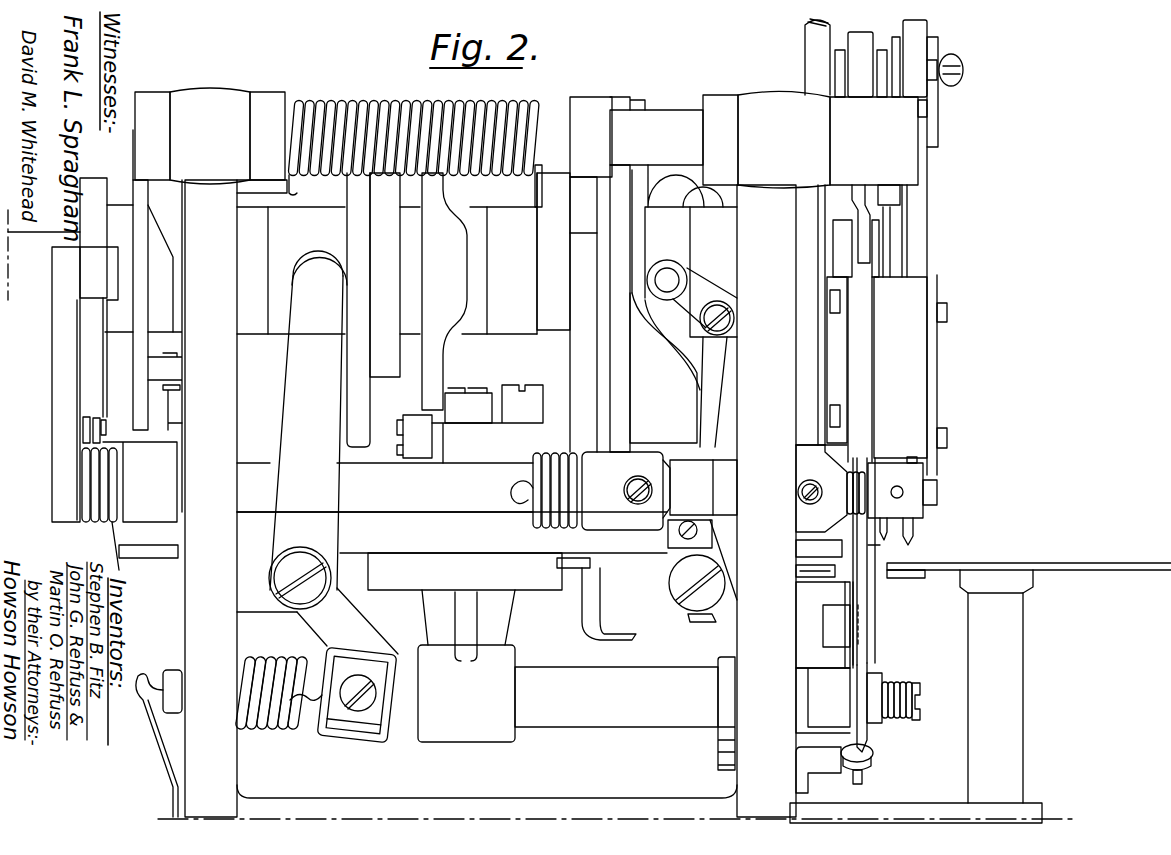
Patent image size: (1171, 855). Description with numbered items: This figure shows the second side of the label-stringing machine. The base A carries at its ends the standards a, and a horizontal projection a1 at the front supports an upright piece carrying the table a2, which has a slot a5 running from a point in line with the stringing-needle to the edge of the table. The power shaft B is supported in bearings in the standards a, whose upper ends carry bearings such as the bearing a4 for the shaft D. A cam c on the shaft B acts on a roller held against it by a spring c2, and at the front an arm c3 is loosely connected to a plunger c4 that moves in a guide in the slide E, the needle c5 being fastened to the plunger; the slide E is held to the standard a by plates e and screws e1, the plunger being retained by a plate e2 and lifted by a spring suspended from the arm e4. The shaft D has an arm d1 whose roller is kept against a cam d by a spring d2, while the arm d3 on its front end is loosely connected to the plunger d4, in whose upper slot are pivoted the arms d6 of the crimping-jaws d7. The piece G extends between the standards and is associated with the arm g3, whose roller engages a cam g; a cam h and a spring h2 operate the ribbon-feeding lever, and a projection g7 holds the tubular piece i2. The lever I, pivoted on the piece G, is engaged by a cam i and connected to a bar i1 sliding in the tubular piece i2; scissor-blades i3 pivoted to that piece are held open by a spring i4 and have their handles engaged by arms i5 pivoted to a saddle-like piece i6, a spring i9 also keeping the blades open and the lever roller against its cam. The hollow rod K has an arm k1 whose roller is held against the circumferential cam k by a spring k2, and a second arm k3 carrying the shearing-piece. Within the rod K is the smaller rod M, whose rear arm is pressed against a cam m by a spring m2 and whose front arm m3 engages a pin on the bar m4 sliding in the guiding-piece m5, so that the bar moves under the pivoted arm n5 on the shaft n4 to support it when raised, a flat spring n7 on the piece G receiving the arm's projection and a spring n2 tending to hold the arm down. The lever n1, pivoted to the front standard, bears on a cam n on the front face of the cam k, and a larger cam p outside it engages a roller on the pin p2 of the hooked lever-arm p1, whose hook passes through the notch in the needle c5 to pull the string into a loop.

The base A is at (512, 798).
The shaft B is at (63, 350).
The shaft D is at (656, 137).
The slide E is at (900, 367).
The piece G is at (452, 551).
The lever I is at (333, 452).
The hollow rod K is at (385, 487).
The rod M is at (118, 448).
The standards a is at (490, 498).
The horizontal projection a1 is at (916, 697).
The table a2 is at (1029, 556).
The bearing a4 is at (531, 138).
The slot a5 is at (905, 578).
The cam c is at (385, 275).
The spring c2 is at (932, 350).
The arm c3 is at (933, 247).
The plunger c4 is at (918, 240).
The needle c5 is at (913, 532).
The cam d is at (591, 274).
The arm d1 is at (552, 247).
The spring d2 is at (414, 135).
The arm d3 is at (854, 64).
The plunger d4 is at (879, 55).
The arms d6 is at (858, 245).
The crimping-jaws d7 is at (862, 400).
The plates e is at (837, 360).
The screws e1 is at (835, 313).
The plate e2 is at (835, 427).
The arm e4 is at (805, 72).
The cam g is at (133, 393).
The arm g3 is at (182, 428).
The projection g7 is at (466, 666).
The cam h is at (444, 291).
The spring h2 is at (432, 437).
The cam i is at (358, 310).
The bar i1 is at (363, 694).
The tubular piece i2 is at (616, 697).
The scissor-blades i3 is at (875, 625).
The spring i4 is at (899, 680).
The arms i5 is at (870, 752).
The saddle-like piece i6 is at (718, 707).
The spring i9 is at (265, 668).
The circumferential cam k is at (627, 274).
The arm k1 is at (659, 491).
The spring k2 is at (553, 458).
The arm k3 is at (821, 501).
The cam m is at (128, 311).
The spring m2 is at (92, 515).
The arm m3 is at (52, 410).
The bar m4 is at (823, 612).
The guiding-piece m5 is at (823, 657).
The cam n is at (648, 248).
The lever n1 is at (716, 373).
The spring n2 is at (712, 625).
The shaft n4 is at (697, 583).
The pivoted arm n5 is at (722, 540).
The flat spring n7 is at (830, 565).
The cam p is at (683, 306).
The lever-arm p1 is at (600, 590).
The pin p2 is at (704, 192).